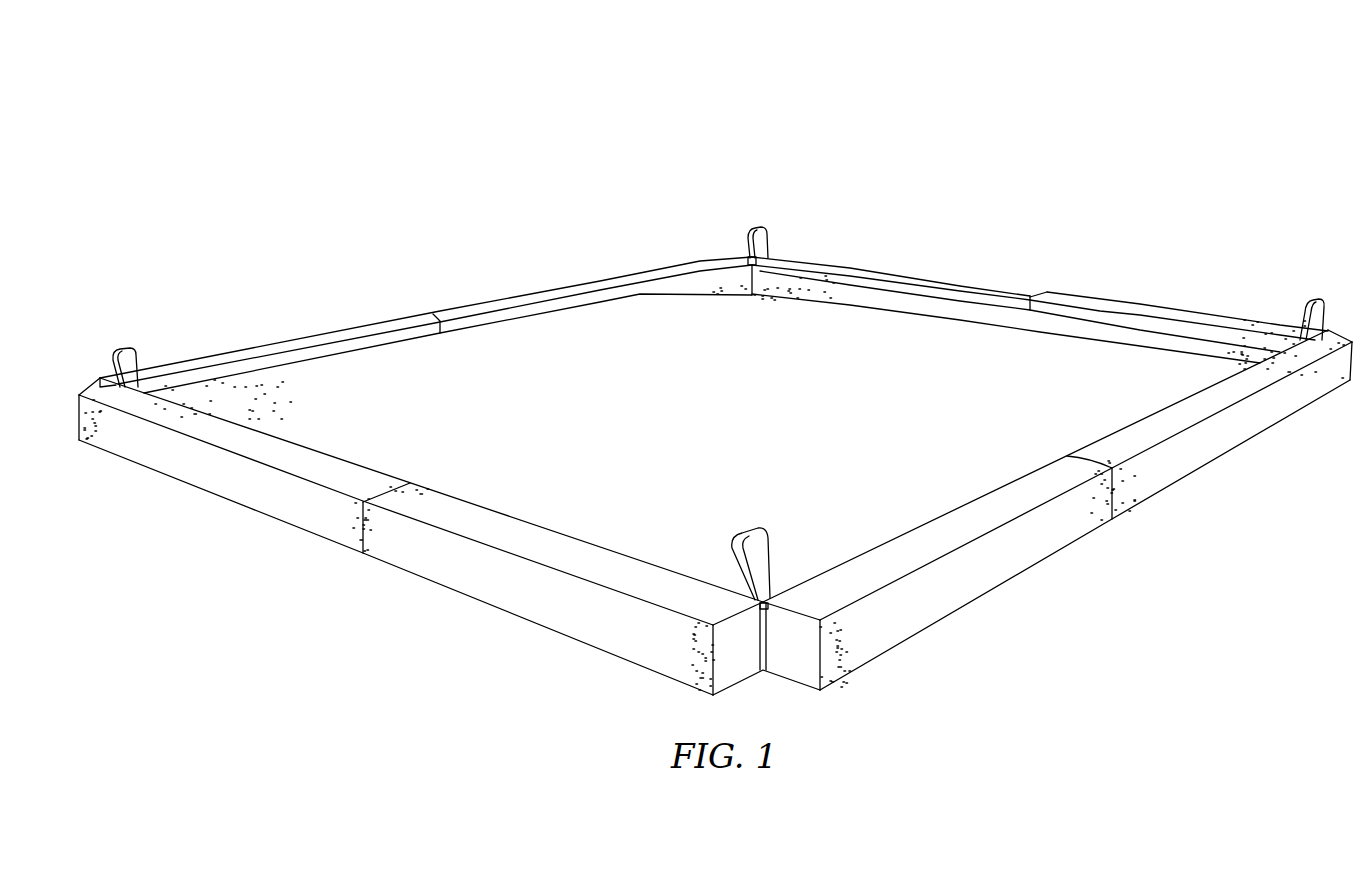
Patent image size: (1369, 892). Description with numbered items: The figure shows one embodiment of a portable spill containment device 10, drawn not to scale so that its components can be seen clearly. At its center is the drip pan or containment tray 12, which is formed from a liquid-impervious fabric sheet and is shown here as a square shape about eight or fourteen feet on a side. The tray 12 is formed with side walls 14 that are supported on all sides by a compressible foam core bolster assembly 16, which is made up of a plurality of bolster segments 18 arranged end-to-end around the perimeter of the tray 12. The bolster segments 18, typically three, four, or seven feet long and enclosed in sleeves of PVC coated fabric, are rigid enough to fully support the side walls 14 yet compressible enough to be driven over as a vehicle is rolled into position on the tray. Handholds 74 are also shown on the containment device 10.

The containment device 10 is at (409, 180).
The containment tray 12 is at (763, 431).
The side walls 14 is at (523, 335).
The bolster assembly 16 is at (494, 297).
The bolster segments 18 is at (641, 273).
The handholds 74 is at (762, 228).